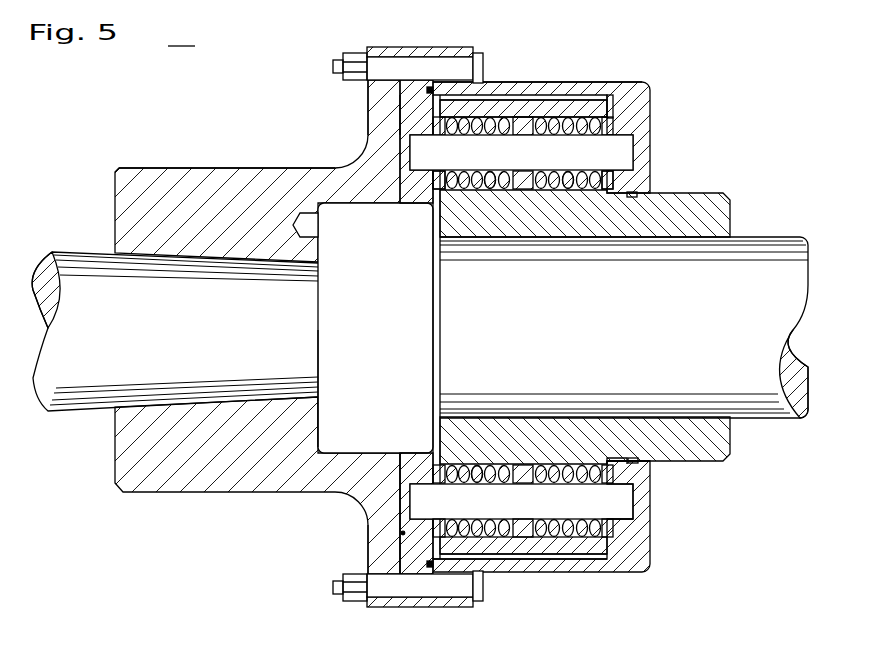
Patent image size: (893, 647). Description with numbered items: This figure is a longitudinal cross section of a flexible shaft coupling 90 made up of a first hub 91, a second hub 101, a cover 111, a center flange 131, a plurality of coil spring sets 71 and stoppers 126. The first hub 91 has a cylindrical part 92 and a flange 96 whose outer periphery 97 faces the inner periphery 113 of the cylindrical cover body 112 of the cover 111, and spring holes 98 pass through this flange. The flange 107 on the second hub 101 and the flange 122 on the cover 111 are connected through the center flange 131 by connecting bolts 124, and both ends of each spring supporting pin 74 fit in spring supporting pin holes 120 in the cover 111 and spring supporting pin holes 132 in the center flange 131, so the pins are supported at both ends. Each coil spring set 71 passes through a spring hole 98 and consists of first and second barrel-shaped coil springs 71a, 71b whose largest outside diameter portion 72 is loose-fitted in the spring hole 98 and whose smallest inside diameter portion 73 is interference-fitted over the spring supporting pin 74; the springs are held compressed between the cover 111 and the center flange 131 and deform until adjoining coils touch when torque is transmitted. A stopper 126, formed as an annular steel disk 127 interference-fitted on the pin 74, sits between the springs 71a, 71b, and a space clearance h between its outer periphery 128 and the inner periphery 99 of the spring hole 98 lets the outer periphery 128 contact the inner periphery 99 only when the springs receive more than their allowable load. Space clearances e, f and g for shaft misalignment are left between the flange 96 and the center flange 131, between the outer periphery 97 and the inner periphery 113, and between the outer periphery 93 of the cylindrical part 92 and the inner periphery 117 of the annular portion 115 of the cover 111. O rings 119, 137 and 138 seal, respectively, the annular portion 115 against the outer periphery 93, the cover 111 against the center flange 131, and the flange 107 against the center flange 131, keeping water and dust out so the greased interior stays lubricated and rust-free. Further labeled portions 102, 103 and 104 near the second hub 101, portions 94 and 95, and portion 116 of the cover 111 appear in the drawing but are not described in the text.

The flexible shaft coupling 90 is at (181, 34).
The second hub 101 is at (236, 156).
The housing body 102 is at (170, 170).
The flange of second hub 107 is at (374, 144).
The adapter upper portion 103 is at (319, 276).
The adapter lower portion 104 is at (319, 397).
The spring supporting pin holes 132 is at (413, 522).
The O ring 138 is at (401, 533).
The center flange 131 is at (417, 548).
The sleeve upper 94 is at (440, 245).
The sleeve lower 95 is at (440, 418).
The first hub 91 is at (690, 188).
The space clearance f is at (490, 92).
The space clearance e is at (400, 108).
The inner periphery of spring hole 99 is at (515, 110).
The outer periphery of flange 97 is at (547, 102).
The flange of first hub 96 is at (580, 107).
The spring hole 98 is at (611, 100).
The spring supporting pin 74 is at (622, 147).
The coil spring set 71 is at (542, 209).
The first barrel-shaped coil spring 71a is at (463, 193).
The smallest inside diameter portion 73 is at (500, 193).
The largest outside diameter portion 72 is at (565, 193).
The second barrel-shaped coil spring 71b is at (593, 193).
The cylindrical part of first hub 92 is at (717, 207).
The outer periphery of cylindrical part 93 is at (703, 461).
The inner periphery of annular portion 117 is at (614, 458).
The space clearance g is at (627, 458).
The O ring 119 is at (638, 458).
The stopper 126 is at (531, 456).
The annular steel disk 127 is at (518, 463).
The annular portion of cover 115 is at (643, 513).
The outer periphery of stopper 128 is at (533, 537).
The cylindrical cover body 112 is at (560, 555).
The cover 111 is at (660, 557).
The inner flange 116 is at (647, 462).
The spring supporting pin holes 120 is at (622, 521).
The inner periphery of cover body 113 is at (602, 565).
The space clearance h is at (502, 561).
The O ring 137 is at (432, 575).
The connecting bolt 124 is at (392, 593).
The flange of cover 122 is at (471, 603).